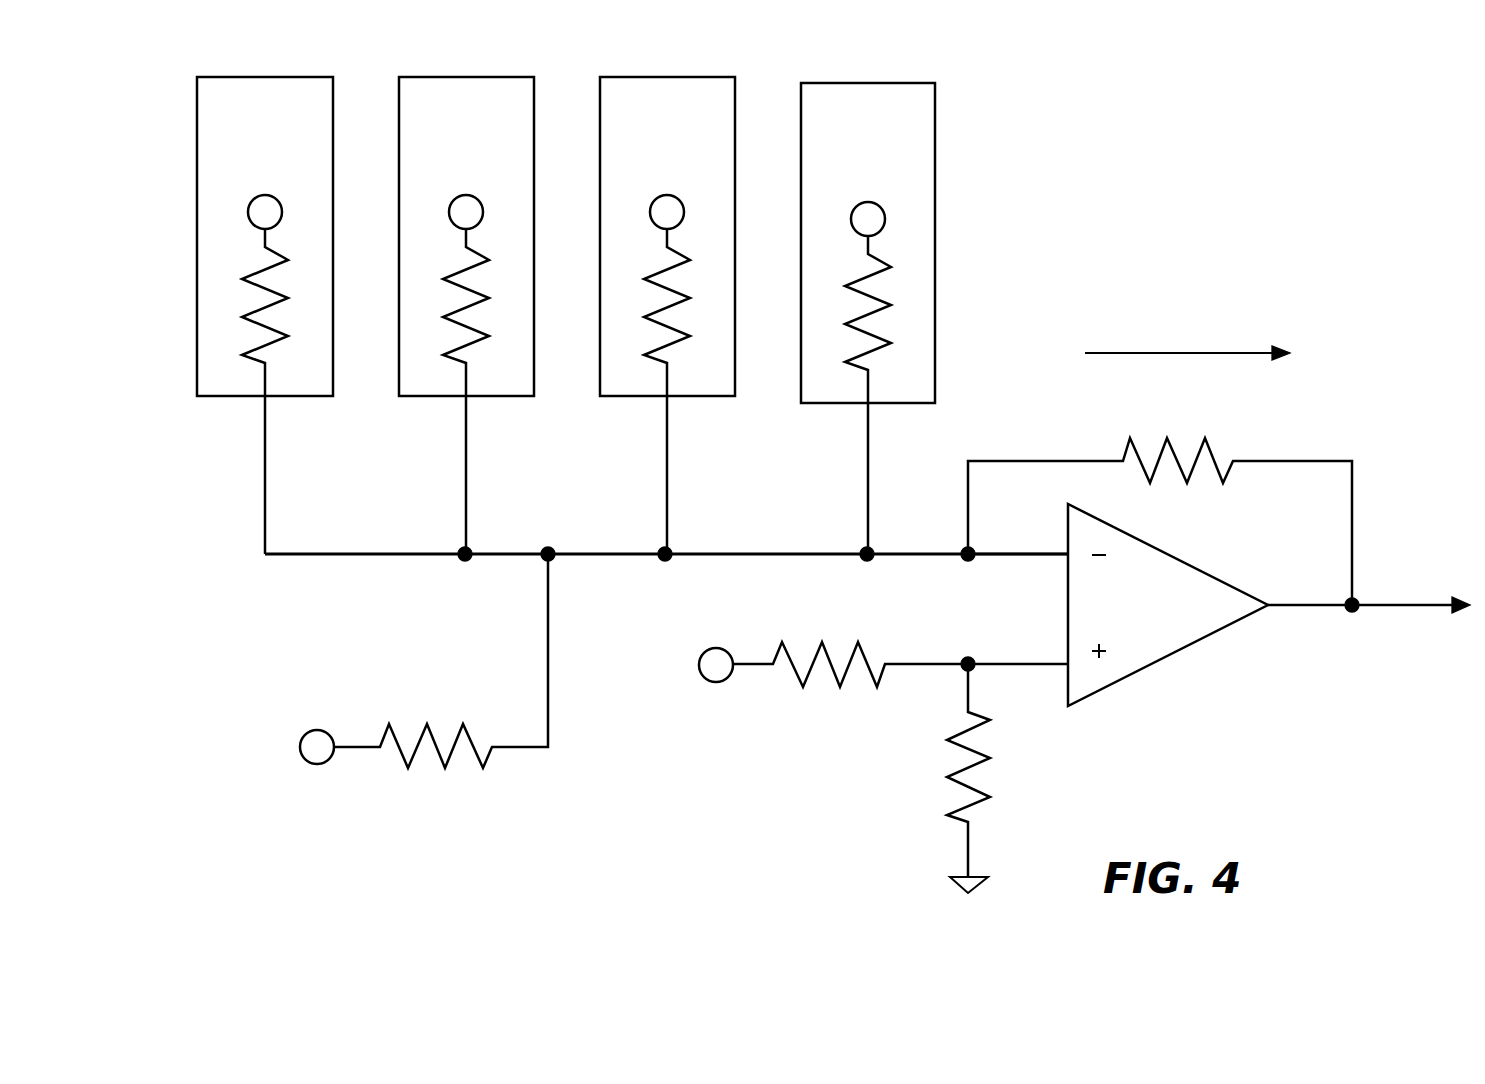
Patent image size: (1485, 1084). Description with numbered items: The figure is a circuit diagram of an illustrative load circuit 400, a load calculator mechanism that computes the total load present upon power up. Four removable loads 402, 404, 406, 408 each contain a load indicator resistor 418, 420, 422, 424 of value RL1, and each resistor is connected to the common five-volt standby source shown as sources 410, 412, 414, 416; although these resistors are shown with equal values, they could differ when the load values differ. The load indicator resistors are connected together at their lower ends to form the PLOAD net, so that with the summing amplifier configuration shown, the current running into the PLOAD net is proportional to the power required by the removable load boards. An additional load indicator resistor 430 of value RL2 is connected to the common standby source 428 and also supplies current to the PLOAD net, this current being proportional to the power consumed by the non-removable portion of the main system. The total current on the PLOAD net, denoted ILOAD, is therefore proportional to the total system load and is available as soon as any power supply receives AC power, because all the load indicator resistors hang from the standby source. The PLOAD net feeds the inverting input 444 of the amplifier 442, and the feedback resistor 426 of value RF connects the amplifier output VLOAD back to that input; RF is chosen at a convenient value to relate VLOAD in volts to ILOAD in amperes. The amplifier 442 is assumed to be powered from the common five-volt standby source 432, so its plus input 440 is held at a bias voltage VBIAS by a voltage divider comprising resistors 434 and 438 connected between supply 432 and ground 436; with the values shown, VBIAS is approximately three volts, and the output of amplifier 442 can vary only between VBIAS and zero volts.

The load circuit 400 is at (1137, 227).
The removable load 402 is at (315, 92).
The removable load 404 is at (517, 85).
The removable load 406 is at (718, 83).
The removable load 408 is at (918, 92).
The common standby source 410 is at (265, 212).
The common standby source 412 is at (466, 212).
The common standby source 414 is at (667, 212).
The common standby source 416 is at (868, 219).
The load indicator resistor 418 is at (280, 370).
The load indicator resistor 420 is at (450, 362).
The load indicator resistor 422 is at (650, 362).
The load indicator resistor 424 is at (852, 370).
The feedback resistor 426 is at (1153, 438).
The common standby source 428 is at (315, 742).
The load indicator resistor 430 is at (430, 775).
The common standby source 432 is at (715, 658).
The resistor 434 is at (837, 690).
The ground 436 is at (960, 882).
The resistor 438 is at (987, 775).
The + input 440 is at (1020, 665).
The amplifier 442 is at (1155, 623).
The inverting input 444 is at (1037, 555).